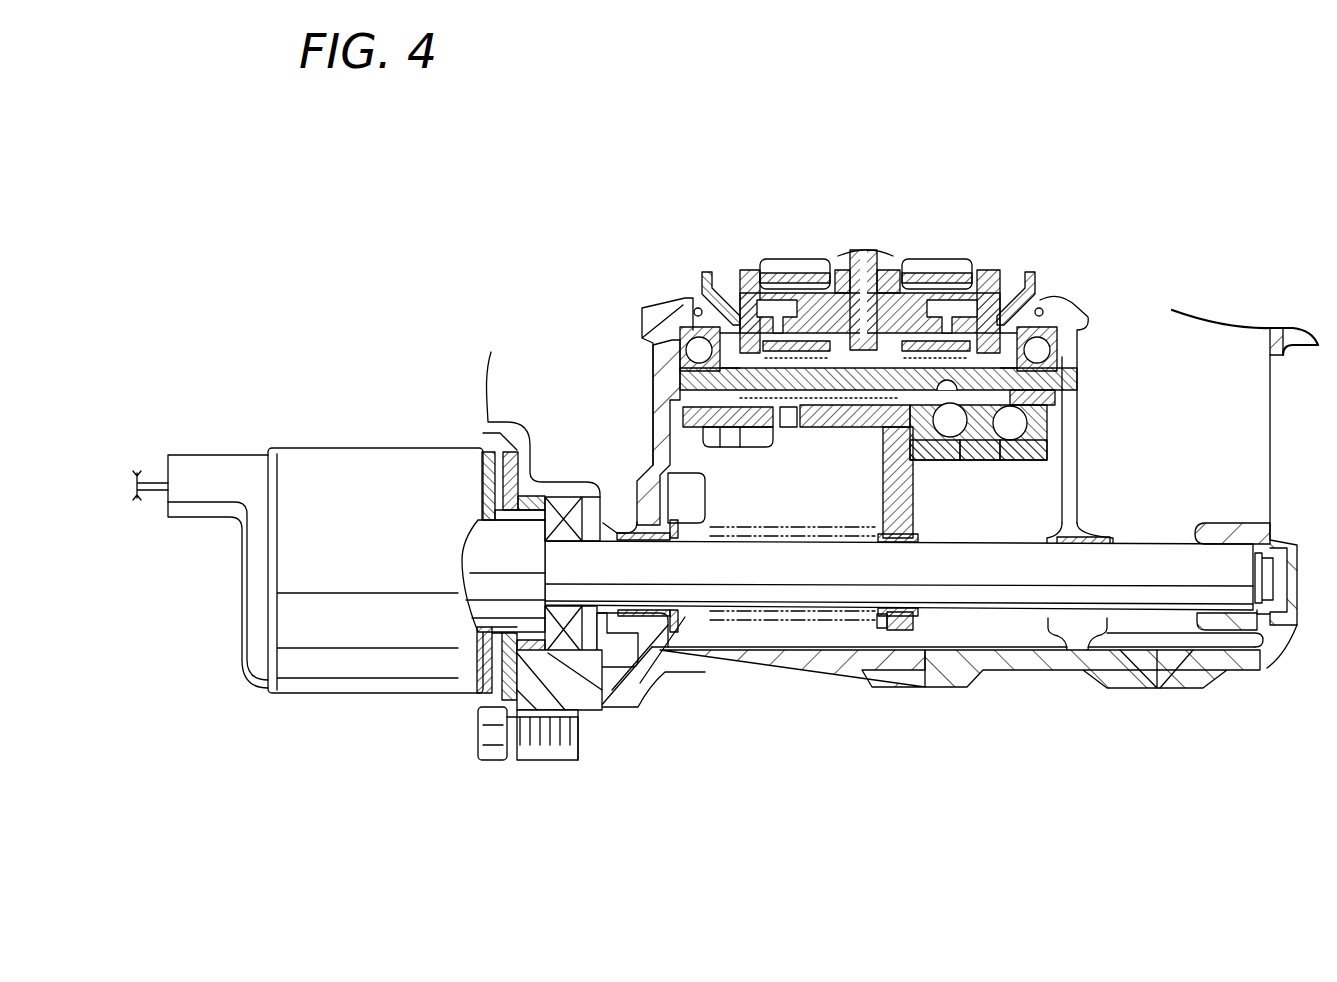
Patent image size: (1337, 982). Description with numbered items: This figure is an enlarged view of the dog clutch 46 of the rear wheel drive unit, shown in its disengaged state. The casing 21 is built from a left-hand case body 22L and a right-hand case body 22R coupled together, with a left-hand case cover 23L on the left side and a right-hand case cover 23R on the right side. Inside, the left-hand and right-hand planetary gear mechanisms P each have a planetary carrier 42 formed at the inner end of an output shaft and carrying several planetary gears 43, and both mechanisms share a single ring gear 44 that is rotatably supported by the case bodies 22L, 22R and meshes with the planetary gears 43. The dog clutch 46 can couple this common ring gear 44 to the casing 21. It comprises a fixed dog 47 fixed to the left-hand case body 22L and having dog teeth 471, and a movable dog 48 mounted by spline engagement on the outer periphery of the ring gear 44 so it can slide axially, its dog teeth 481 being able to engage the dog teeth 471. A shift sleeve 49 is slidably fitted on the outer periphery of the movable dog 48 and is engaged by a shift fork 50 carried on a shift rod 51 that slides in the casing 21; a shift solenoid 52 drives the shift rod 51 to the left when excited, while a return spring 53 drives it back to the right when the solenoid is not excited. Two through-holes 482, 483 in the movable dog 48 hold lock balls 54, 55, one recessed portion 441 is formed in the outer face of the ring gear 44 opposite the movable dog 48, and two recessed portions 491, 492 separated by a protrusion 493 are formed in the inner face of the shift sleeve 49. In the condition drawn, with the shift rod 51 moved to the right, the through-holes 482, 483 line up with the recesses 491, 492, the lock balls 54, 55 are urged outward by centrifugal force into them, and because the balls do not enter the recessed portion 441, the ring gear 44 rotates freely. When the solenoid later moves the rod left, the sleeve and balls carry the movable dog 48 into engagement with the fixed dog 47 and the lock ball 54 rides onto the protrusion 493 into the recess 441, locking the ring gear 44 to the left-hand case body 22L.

The planetary gear mechanism P is at (853, 217).
The casing 21 is at (898, 568).
The left-hand case body 22L is at (817, 670).
The right-hand case body 22R is at (1118, 677).
The left-hand case cover 23L is at (578, 700).
The right-hand case cover 23R is at (1202, 689).
The planetary carrier 42 is at (740, 268).
The planetary gear 43 is at (785, 256).
The ring gear 44 is at (852, 363).
The recessed portion 441 is at (880, 268).
The dog clutch 46 is at (930, 630).
The fixed dog 47 is at (680, 418).
The dog teeth 471 is at (750, 432).
The movable dog 48 is at (836, 436).
The dog teeth 481 is at (697, 393).
The through-hole 482 is at (947, 394).
The through-hole 483 is at (1033, 397).
The shift sleeve 49 is at (1033, 474).
The recessed portion 491 is at (944, 445).
The recessed portion 492 is at (1030, 440).
The protrusion 493 is at (993, 462).
The shift fork 50 is at (897, 543).
The shift rod 51 is at (1177, 557).
The shift solenoid 52 is at (305, 430).
The return spring 53 is at (680, 622).
The lock ball 54 is at (952, 437).
The lock ball 55 is at (1027, 428).